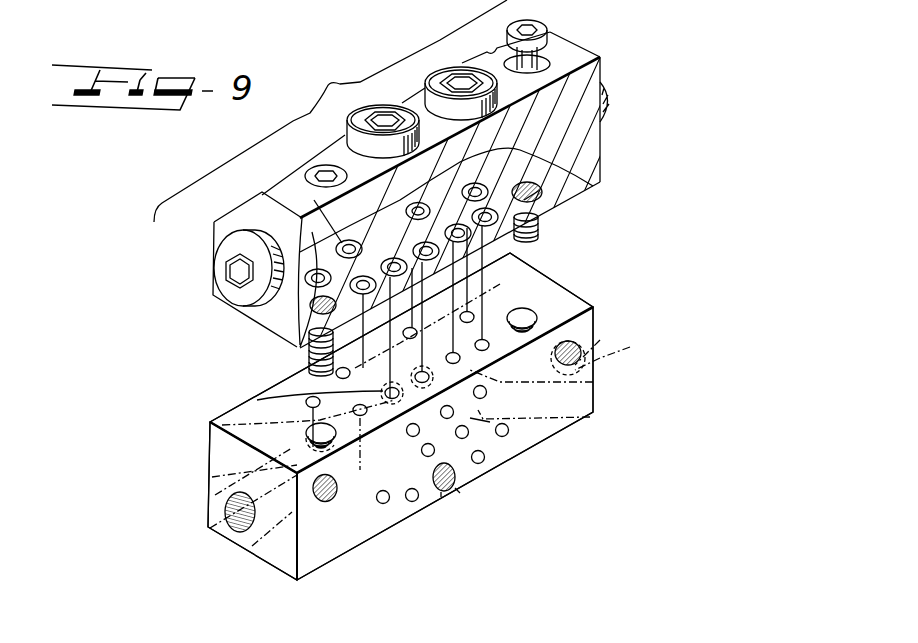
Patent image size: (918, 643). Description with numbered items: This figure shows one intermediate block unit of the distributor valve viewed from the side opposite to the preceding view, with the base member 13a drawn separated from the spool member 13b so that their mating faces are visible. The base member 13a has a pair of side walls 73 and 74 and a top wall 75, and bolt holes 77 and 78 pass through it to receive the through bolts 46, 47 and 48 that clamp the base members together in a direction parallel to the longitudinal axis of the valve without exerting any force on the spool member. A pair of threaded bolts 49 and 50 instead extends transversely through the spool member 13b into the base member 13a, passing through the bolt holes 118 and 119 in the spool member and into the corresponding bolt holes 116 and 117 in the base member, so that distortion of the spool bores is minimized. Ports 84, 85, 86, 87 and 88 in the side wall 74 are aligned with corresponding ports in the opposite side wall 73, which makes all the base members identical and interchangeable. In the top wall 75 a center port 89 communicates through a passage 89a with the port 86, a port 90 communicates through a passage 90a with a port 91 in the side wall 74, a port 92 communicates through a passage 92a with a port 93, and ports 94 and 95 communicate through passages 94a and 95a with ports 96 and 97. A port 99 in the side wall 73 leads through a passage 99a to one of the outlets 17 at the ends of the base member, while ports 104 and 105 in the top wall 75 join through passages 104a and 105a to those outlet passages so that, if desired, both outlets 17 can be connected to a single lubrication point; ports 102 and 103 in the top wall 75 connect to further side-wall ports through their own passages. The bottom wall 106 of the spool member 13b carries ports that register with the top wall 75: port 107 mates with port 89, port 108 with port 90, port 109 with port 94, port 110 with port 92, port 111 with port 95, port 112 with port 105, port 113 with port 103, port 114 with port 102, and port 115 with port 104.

The base member 13a is at (594, 303).
The spool member 13b is at (607, 63).
The outlets 17 is at (630, 347).
The through bolt 46 is at (600, 340).
The through bolt 47 is at (448, 492).
The through bolt 48 is at (326, 502).
The threaded bolt 49 is at (309, 174).
The threaded bolt 50 is at (547, 47).
The side wall 73 is at (207, 447).
The side wall 74 is at (570, 404).
The top wall 75 is at (543, 300).
The bolt hole 77 is at (460, 493).
The bolt hole 78 is at (577, 345).
The port 84 is at (486, 464).
The port 85 is at (470, 440).
The port 86 is at (506, 437).
The port 87 is at (441, 492).
The port 88 is at (412, 503).
The center port 89 is at (418, 373).
The passage 89a is at (450, 418).
The port 90 is at (306, 402).
The passage 90a is at (414, 437).
The port 91 is at (427, 458).
The port 92 is at (447, 355).
The passage 92a is at (594, 382).
The port 93 is at (486, 396).
The port 94 is at (353, 410).
The passage 94a is at (215, 496).
The port 95 is at (489, 346).
The passage 95a is at (590, 417).
The port 96 is at (382, 505).
The port 97 is at (490, 422).
The port 99 is at (212, 477).
The passage 99a is at (252, 546).
The port 102 is at (415, 329).
The port 103 is at (336, 373).
The port 104 is at (471, 313).
The passage 104a is at (500, 284).
The port 105 is at (257, 400).
The passage 105a is at (222, 425).
The bottom wall 106 is at (518, 179).
The port 107 is at (428, 242).
The port 108 is at (366, 276).
The port 109 is at (349, 240).
The port 110 is at (470, 182).
The port 111 is at (521, 190).
The port 112 is at (308, 270).
The port 113 is at (316, 215).
The port 114 is at (413, 203).
The port 115 is at (481, 183).
The bolt hole 116 is at (307, 440).
The bolt hole 117 is at (531, 315).
The bolt hole 118 is at (312, 307).
The bolt hole 119 is at (540, 190).